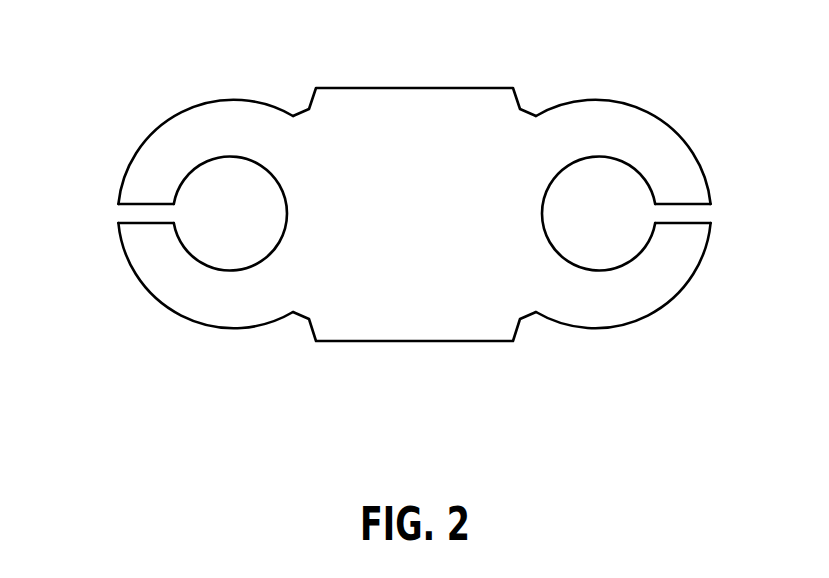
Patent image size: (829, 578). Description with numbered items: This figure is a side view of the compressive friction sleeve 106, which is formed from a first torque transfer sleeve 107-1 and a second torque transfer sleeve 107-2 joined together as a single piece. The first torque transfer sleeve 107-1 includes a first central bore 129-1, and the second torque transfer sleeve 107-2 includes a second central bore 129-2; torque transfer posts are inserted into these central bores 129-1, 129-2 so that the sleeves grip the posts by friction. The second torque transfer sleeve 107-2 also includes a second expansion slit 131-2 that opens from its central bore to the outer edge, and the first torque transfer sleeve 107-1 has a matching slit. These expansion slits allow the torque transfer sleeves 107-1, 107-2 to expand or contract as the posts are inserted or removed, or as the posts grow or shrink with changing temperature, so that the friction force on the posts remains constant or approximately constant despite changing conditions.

The compressive friction sleeve 106 is at (420, 127).
The first torque transfer sleeve 107-1 is at (177, 125).
The second torque transfer sleeve 107-2 is at (655, 127).
The first central bore 129-1 is at (203, 237).
The second central bore 129-2 is at (598, 237).
The second expansion slit 131-2 is at (140, 214).